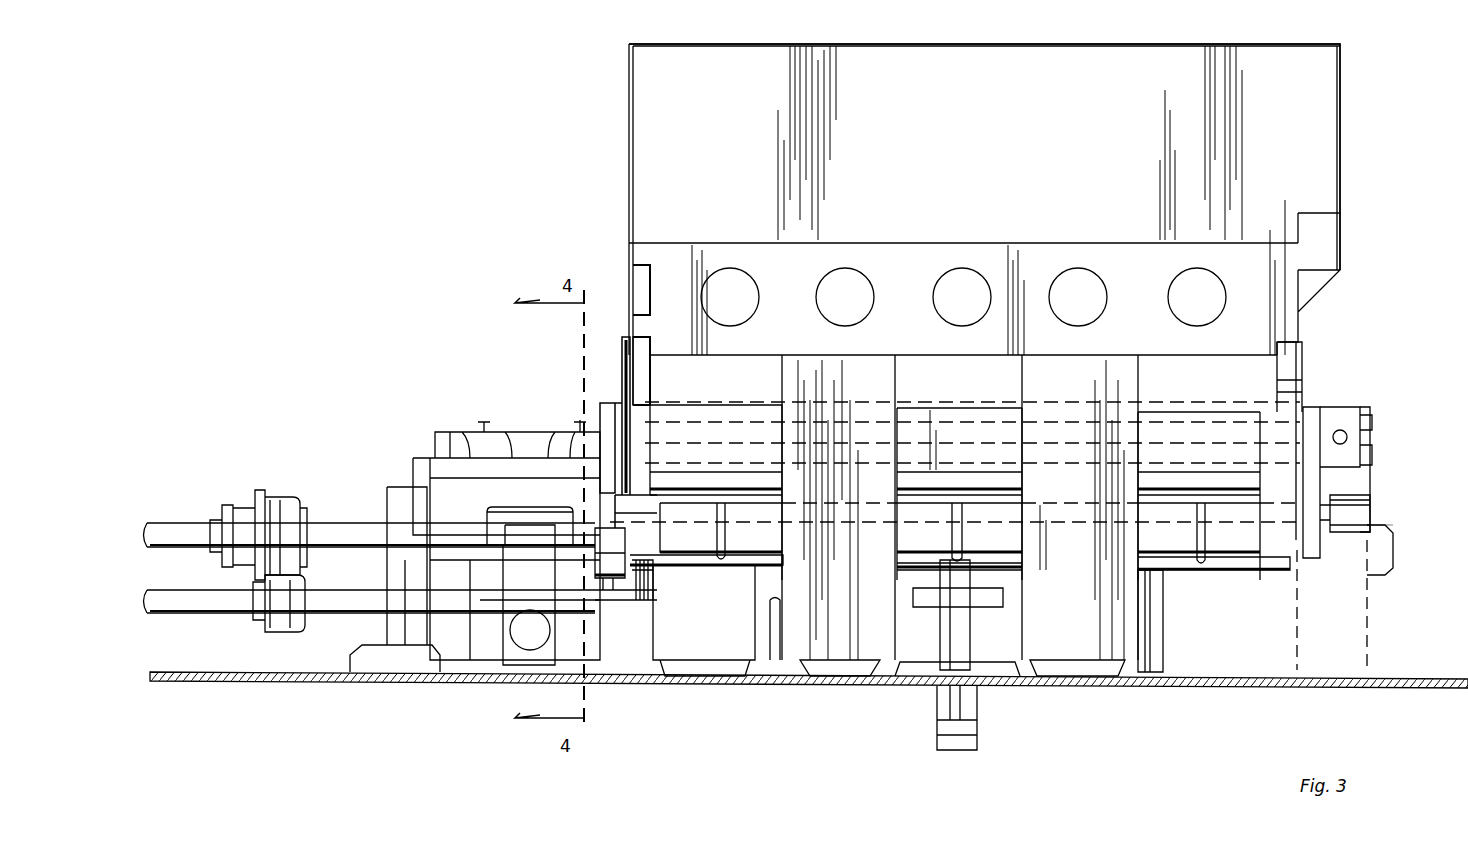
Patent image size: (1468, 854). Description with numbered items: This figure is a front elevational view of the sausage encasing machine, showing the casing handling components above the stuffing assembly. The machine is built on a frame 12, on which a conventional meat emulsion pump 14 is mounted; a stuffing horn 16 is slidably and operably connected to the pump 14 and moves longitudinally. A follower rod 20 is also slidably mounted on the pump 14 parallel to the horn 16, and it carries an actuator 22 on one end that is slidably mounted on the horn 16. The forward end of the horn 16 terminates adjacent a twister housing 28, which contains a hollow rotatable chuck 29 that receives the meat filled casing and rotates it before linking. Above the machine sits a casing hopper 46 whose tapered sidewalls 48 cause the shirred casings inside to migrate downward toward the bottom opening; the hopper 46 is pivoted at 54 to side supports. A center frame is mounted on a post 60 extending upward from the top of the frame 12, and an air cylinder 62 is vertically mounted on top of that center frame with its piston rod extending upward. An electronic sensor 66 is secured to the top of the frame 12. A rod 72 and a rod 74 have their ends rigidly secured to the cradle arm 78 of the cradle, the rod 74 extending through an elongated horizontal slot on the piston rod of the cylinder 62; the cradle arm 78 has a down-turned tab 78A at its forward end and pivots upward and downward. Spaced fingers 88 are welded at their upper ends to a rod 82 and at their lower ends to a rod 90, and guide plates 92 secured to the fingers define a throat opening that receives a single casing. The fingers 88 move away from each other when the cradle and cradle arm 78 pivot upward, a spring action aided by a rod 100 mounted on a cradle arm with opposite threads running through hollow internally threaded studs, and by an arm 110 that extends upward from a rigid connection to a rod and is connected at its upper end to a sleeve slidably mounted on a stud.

The frame 12 is at (337, 614).
The meat emulsion pump 14 is at (460, 466).
The stuffing horn 16 is at (362, 535).
The follower rod 20 is at (245, 672).
The actuator 22 is at (648, 580).
The twister housing 28 is at (1367, 612).
The chuck 29 is at (1375, 530).
The casing hopper 46 is at (614, 136).
The tapered sidewalls 48 is at (628, 157).
The pivot 54 is at (627, 365).
The post 60 is at (760, 640).
The air cylinder 62 is at (987, 600).
The electronic sensor 66 is at (950, 725).
The rod 72 is at (1316, 430).
The rod 74 is at (1310, 445).
The cradle arm 78 is at (608, 410).
The down-turned tab 78A is at (606, 440).
The rod 82 is at (1333, 553).
The spaced fingers 88 is at (717, 548).
The rod 90 is at (1268, 570).
The guide plates 92 is at (1182, 557).
The rod 100 is at (1335, 440).
The arm 110 is at (1365, 475).